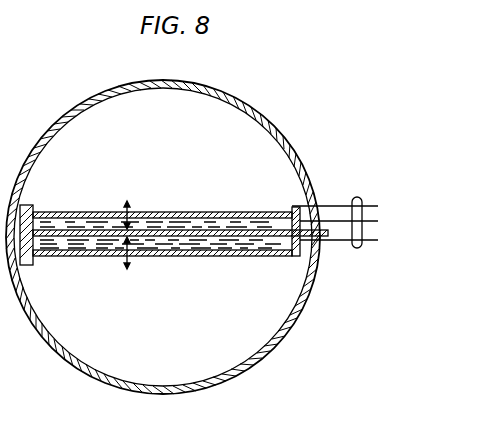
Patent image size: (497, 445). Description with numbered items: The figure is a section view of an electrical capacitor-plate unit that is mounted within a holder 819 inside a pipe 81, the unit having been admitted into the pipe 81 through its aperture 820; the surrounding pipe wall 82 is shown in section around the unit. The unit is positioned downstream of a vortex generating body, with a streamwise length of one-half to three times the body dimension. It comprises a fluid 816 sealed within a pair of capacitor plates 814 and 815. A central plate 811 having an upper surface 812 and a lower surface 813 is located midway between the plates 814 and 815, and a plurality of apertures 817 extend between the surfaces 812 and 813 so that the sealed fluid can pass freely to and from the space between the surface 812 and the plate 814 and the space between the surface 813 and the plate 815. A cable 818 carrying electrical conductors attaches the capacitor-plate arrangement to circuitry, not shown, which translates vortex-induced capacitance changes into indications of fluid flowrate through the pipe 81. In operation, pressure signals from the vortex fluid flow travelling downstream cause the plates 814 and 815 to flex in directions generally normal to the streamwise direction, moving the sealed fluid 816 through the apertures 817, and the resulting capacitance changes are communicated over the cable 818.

The pipe 81 is at (232, 92).
The vessel wall 82 is at (263, 122).
The central plate 811 is at (303, 203).
The upper surface 812 is at (248, 232).
The lower surface 813 is at (242, 240).
The capacitor plate 814 is at (225, 212).
The capacitor plate 815 is at (172, 256).
The fluid 816 is at (152, 247).
The apertures 817 is at (188, 233).
The external connector 818 is at (357, 249).
The holder 819 is at (33, 265).
The aperture 820 is at (313, 222).